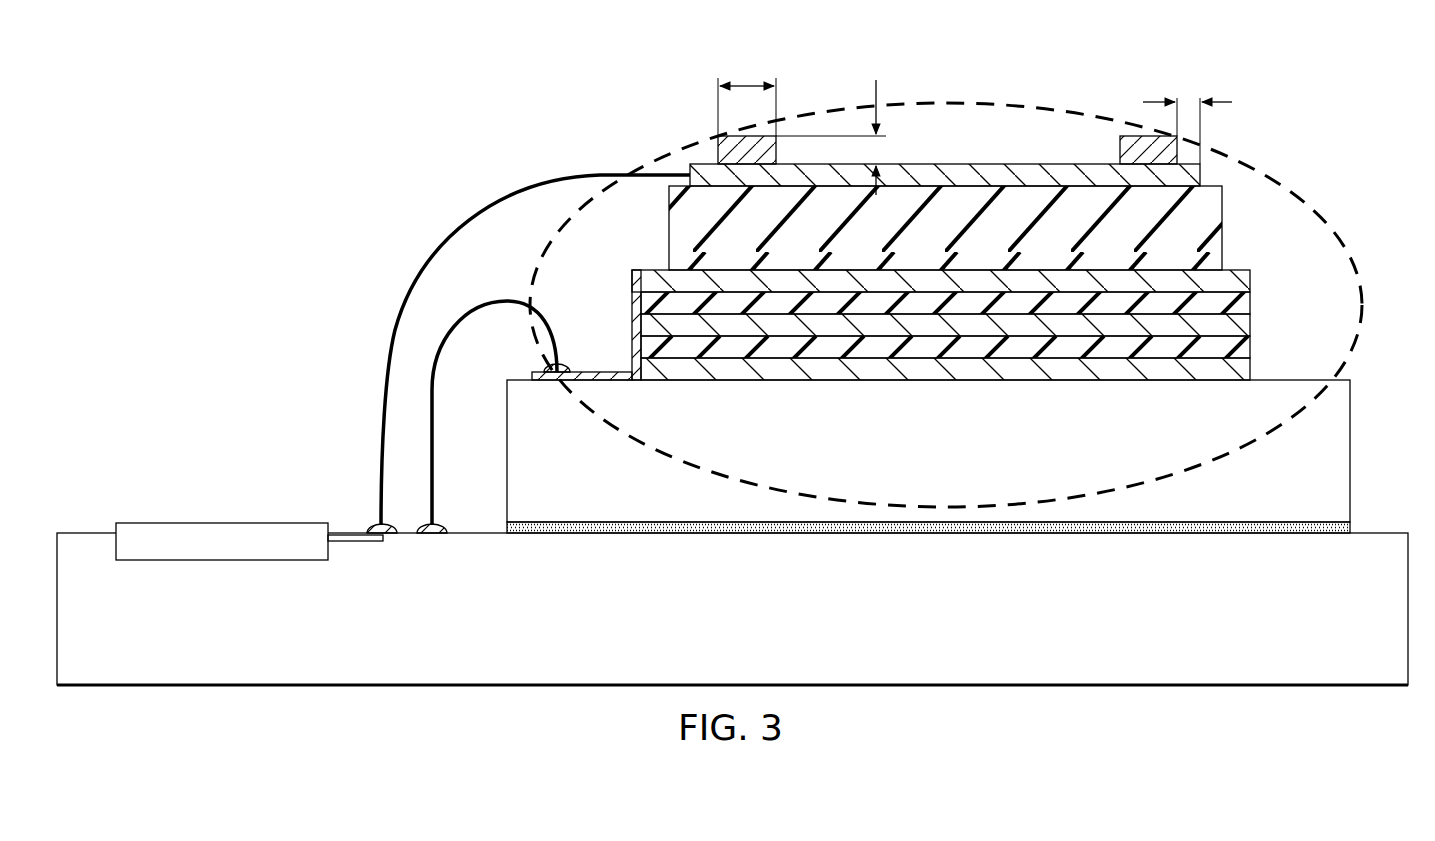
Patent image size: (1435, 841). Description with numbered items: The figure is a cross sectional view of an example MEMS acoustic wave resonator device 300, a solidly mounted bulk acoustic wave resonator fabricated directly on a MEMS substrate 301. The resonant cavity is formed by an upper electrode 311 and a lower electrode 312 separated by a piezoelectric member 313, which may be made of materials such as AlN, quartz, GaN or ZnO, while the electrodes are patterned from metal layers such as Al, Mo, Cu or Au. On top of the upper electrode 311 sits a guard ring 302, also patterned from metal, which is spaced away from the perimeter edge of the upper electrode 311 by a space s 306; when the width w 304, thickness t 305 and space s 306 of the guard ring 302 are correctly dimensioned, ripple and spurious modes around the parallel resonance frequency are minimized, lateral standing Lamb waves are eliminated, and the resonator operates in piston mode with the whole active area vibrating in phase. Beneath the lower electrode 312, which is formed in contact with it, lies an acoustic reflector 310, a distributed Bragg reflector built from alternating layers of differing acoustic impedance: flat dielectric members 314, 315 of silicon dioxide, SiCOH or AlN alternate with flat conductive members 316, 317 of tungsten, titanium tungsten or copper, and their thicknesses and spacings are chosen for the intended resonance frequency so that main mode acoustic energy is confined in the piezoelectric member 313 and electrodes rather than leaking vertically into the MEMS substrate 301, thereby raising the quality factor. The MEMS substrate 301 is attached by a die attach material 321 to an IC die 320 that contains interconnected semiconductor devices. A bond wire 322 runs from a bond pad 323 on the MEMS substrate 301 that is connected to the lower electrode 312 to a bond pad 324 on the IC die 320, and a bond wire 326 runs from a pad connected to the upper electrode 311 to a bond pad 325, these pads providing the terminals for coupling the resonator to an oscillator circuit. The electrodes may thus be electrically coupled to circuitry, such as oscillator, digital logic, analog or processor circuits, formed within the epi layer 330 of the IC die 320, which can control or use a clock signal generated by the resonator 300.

The MEMS acoustic wave resonator device 300 is at (1002, 100).
The MEMS substrate 301 is at (1350, 455).
The guard ring 302 is at (722, 150).
The width w 304 is at (746, 84).
The thickness t 305 is at (872, 94).
The space s 306 is at (1222, 100).
The acoustic reflector 310 is at (983, 313).
The upper electrode 311 is at (1186, 176).
The lower electrode 312 is at (1240, 280).
The piezoelectric member 313 is at (1213, 227).
The dielectric member 314 is at (1240, 303).
The dielectric member 315 is at (1240, 349).
The conductive member 316 is at (1240, 326).
The conductive member 317 is at (1240, 371).
The IC die 320 is at (617, 686).
The die attach material 321 is at (1352, 527).
The bond wire 322 is at (506, 300).
The bond pad / bump 323 is at (568, 366).
The bond pad 324 is at (440, 527).
The bond pad 325 is at (368, 527).
The bond wire 326 is at (402, 320).
The epi layer 330 is at (222, 560).